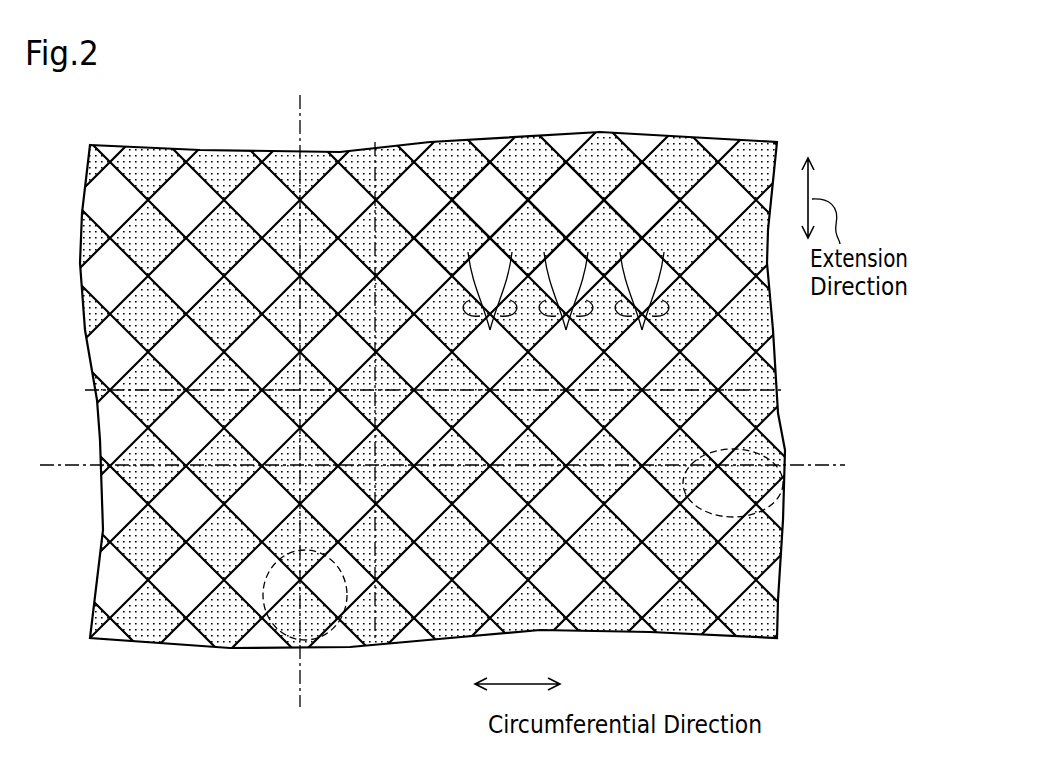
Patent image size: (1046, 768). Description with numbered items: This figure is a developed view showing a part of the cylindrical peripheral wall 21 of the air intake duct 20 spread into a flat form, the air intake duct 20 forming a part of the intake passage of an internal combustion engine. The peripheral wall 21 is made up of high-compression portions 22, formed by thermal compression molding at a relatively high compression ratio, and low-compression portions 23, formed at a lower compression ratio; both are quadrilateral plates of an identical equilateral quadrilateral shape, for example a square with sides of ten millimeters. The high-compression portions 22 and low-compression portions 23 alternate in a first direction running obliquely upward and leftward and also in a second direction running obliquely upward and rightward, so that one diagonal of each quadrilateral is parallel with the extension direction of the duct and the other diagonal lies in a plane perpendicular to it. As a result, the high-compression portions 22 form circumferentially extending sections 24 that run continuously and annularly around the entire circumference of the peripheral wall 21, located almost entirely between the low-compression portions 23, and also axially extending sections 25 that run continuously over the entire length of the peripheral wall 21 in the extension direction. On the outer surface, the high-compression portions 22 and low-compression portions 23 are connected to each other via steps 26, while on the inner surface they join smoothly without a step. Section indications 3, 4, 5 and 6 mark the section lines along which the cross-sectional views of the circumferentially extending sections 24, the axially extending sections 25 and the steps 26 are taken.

The air intake duct 20 is at (523, 369).
The peripheral wall 21 is at (720, 137).
The high-compression portions 22 is at (470, 217).
The low-compression portions 23 is at (498, 192).
The circumferentially extending section 24 is at (780, 498).
The axially extending section 25 is at (340, 623).
The steps 26 is at (566, 309).
The section line 3-3 (FIG. 3) 3 is at (850, 495).
The section line 4-4 (FIG. 4) 4 is at (272, 712).
The section line 5-5 (FIG. 5) 5 is at (837, 378).
The section line 6-6 (FIG. 6) 6 is at (385, 705).